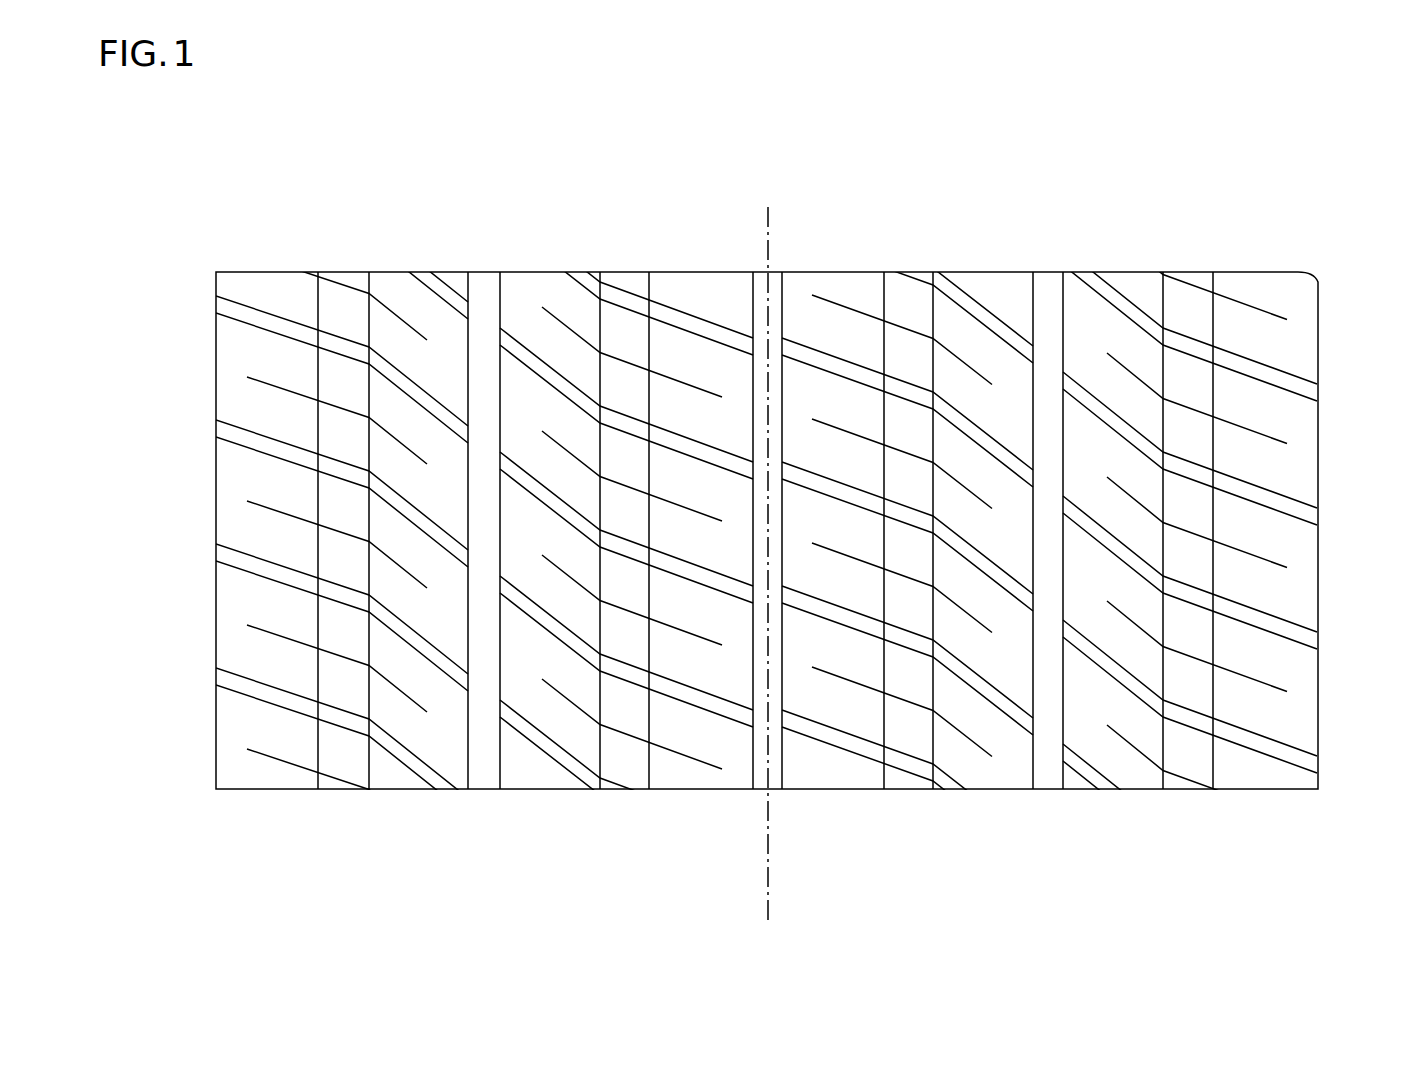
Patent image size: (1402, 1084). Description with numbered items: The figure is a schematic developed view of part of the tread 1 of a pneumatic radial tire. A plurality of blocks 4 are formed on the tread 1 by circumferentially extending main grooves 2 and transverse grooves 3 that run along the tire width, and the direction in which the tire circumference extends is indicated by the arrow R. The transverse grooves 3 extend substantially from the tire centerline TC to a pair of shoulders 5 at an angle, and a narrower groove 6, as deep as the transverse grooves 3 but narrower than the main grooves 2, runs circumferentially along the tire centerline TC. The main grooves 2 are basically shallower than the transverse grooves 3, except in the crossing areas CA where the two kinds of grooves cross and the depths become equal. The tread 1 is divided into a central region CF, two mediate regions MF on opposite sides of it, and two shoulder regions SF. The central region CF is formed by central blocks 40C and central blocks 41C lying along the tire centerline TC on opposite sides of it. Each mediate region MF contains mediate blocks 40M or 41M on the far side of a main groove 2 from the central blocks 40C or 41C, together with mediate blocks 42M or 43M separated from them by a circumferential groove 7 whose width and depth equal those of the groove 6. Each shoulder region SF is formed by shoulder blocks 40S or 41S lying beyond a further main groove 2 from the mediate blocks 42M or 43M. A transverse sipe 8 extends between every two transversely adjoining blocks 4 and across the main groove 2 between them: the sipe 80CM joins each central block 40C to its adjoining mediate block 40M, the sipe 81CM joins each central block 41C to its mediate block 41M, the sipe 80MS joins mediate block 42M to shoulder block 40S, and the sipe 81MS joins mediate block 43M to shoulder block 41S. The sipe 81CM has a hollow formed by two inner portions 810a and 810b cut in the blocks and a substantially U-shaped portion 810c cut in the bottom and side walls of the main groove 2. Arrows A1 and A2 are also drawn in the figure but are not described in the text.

The tread 1 is at (1267, 257).
The main groove 2 is at (342, 315).
The transverse groove 3 is at (227, 303).
The block 4 is at (660, 295).
The shoulder 5 is at (215, 518).
The groove 6 is at (763, 303).
The groove 7 is at (490, 310).
The transverse sipe 8 is at (271, 507).
The sipe 80MS is at (280, 386).
The transverse sipe 80CM is at (619, 367).
The transverse sipe 81CM is at (848, 305).
The sipe 81MS is at (1135, 375).
The inner portion 810a is at (827, 420).
The inner portion 810b is at (950, 473).
The substantially U-shaped portion 810c is at (903, 447).
The shoulder block 40S is at (242, 778).
The mediate block 42M is at (437, 733).
The mediate block 40M is at (525, 767).
The central block 40C is at (672, 718).
The central block 41C is at (847, 770).
The mediate block 41M is at (963, 757).
The mediate block 43M is at (1103, 752).
The shoulder block 41S is at (1253, 768).
The crossing area CA is at (1183, 348).
The tire centerline TC is at (772, 840).
The direction A1 is at (795, 515).
The direction A2 is at (1007, 617).
The circumferential direction R is at (1343, 534).
The shoulder region SF is at (213, 193).
The mediate region MF is at (368, 193).
The central region CF is at (654, 193).